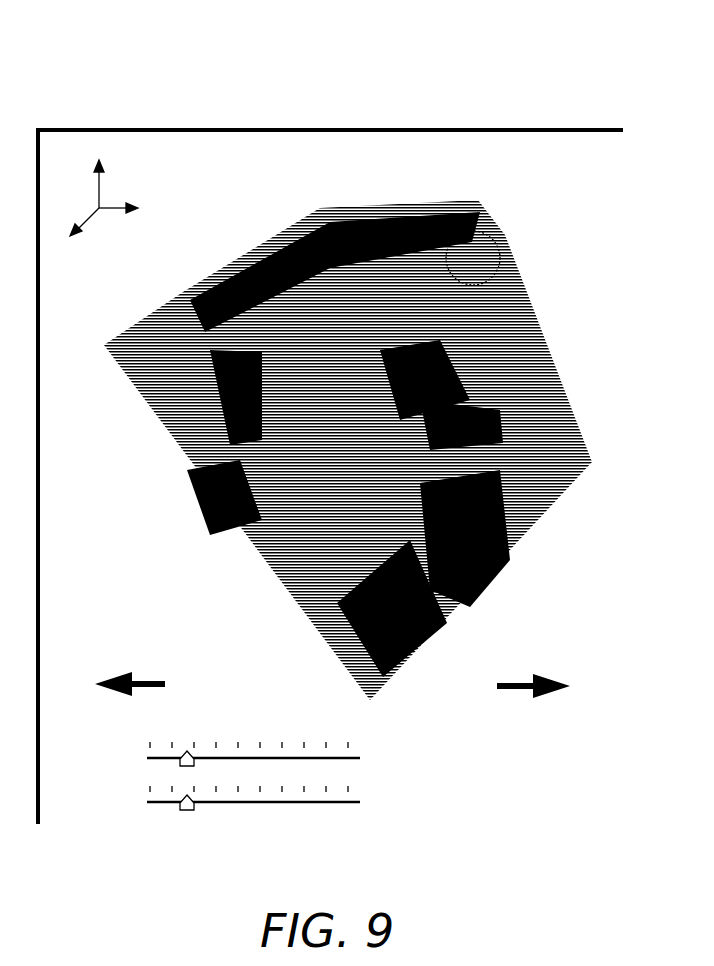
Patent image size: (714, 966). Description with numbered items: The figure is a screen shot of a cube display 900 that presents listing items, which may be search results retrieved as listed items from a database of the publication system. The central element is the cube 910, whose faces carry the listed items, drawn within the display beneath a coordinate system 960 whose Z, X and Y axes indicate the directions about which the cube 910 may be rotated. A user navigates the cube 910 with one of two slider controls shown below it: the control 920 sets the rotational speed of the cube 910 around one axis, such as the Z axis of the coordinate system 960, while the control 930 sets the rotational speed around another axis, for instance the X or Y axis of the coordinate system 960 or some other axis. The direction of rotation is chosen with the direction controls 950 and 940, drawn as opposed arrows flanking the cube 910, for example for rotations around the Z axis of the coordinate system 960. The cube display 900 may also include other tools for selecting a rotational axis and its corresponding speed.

The cube display 900 is at (515, 53).
The cube 910 is at (487, 230).
The control 920 is at (351, 758).
The control 930 is at (351, 802).
The direction control 940 is at (150, 672).
The direction control 950 is at (514, 680).
The coordinate system 960 is at (124, 167).